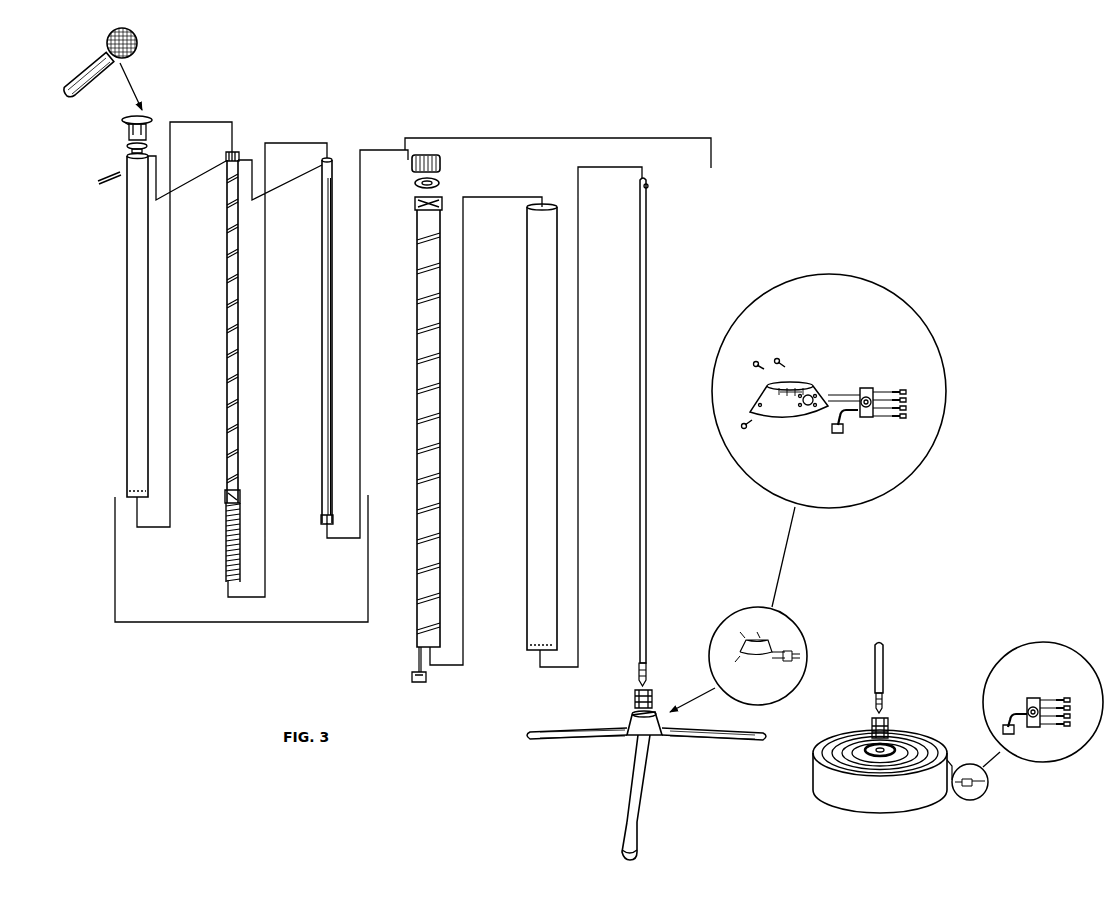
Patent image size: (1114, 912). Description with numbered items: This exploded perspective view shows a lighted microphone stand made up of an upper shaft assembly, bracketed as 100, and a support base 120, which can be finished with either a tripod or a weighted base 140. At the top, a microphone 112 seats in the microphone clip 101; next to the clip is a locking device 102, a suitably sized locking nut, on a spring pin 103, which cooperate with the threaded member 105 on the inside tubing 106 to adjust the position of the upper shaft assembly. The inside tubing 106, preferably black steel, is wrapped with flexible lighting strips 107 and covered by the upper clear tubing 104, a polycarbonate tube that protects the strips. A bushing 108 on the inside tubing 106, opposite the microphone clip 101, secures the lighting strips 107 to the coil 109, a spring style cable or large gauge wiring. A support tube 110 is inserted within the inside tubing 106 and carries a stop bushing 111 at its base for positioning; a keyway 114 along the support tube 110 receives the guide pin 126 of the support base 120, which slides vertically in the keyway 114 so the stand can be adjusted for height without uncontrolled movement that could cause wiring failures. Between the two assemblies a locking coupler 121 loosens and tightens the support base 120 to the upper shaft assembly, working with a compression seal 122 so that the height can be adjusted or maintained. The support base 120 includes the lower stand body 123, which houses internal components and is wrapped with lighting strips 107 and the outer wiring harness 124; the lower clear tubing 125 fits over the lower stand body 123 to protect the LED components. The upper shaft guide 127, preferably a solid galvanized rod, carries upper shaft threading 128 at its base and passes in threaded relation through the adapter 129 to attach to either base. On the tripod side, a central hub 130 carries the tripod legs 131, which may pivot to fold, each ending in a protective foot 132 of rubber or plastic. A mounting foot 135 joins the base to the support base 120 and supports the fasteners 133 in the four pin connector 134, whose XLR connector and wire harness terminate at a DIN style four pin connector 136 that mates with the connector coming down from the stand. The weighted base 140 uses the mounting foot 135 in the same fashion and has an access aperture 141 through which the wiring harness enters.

The microphone stand upper assembly 100 is at (245, 622).
The microphone clip 101 is at (123, 130).
The locking device 102 is at (125, 147).
The spring pin 103 is at (104, 173).
The upper clear tubing 104 is at (125, 333).
The threaded member 105 is at (225, 157).
The inside tubing 106 is at (226, 243).
The lighting strips 107 is at (226, 278).
The bushing 108 is at (224, 495).
The coil 109 is at (224, 542).
The support tube 110 is at (321, 312).
The stop bushing 111 is at (320, 522).
The microphone 112 is at (90, 63).
The keyway 114 is at (328, 198).
The support base 120 is at (557, 138).
The locking coupler 121 is at (410, 164).
The compression seal 122 is at (413, 183).
The lower stand body 123 is at (415, 367).
The outer wiring harness 124 is at (416, 657).
The lower clear tubing 125 is at (525, 342).
The guide pin 126 is at (650, 184).
The upper shaft guide 127 is at (638, 297).
The upper shaft threading 128 is at (637, 677).
The adapter 129 is at (633, 697).
The tripod hub 130 is at (626, 722).
The tripod legs 131 is at (633, 772).
The protective foot 132 is at (620, 848).
The fastener 133 is at (760, 360).
The four pin connector 134 is at (862, 386).
The mounting foot 135 is at (803, 426).
The DIN style four pin connector 136 is at (849, 431).
The weighted base 140 is at (811, 778).
The access aperture 141 is at (890, 746).